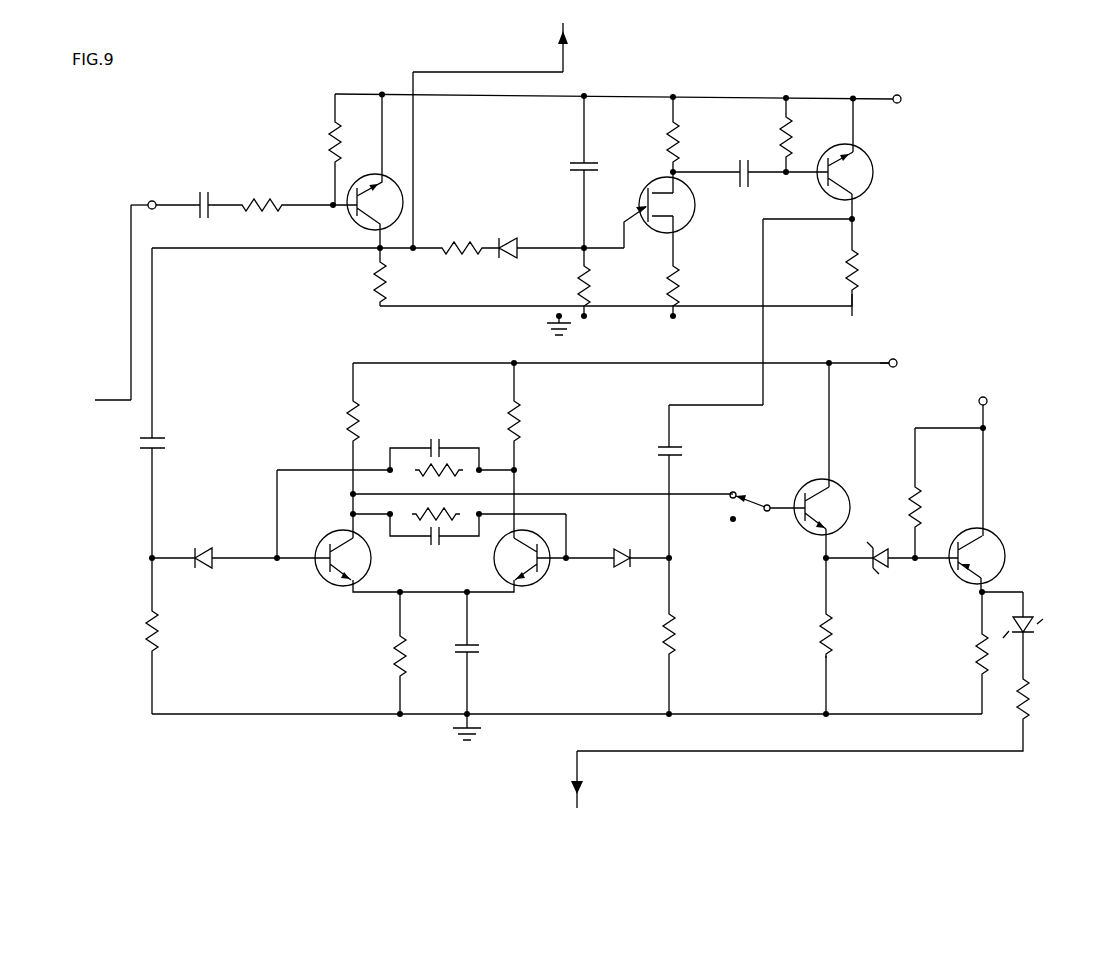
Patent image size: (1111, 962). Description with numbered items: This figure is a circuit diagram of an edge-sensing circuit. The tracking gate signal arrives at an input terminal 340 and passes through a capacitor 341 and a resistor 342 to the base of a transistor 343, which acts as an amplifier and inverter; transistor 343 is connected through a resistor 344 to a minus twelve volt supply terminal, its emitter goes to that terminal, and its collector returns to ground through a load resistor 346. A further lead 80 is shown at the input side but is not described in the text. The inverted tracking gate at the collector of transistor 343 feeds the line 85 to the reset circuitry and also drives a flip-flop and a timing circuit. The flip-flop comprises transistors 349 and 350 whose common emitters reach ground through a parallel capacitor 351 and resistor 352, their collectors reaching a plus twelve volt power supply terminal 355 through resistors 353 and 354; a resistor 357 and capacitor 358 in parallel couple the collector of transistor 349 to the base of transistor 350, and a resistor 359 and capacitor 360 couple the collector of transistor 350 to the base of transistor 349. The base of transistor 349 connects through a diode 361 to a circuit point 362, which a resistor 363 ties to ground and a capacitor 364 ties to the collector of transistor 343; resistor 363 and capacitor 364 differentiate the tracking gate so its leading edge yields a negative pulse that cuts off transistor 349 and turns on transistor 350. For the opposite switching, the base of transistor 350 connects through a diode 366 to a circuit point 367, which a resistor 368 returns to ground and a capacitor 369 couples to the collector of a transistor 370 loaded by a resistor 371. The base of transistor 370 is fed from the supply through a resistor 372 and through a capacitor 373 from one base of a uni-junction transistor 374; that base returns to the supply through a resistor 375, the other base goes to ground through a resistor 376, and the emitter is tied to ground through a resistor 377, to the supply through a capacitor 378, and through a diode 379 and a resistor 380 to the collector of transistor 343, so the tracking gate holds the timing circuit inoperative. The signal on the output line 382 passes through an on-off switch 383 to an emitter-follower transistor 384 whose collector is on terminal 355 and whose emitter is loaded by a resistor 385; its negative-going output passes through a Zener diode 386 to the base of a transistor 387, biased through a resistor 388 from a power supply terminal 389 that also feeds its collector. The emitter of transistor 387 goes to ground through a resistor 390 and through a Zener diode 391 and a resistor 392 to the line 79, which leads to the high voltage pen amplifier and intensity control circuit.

The line 79 is at (585, 790).
The ground lead 80 is at (116, 398).
The line 85 is at (585, 47).
The input terminal 340 is at (153, 200).
The capacitor 341 is at (207, 192).
The resistor 342 is at (252, 196).
The transistor 343 is at (403, 194).
The resistor 344 is at (325, 148).
The load resistor 346 is at (374, 291).
The transistor 349 is at (358, 553).
The transistor 350 is at (528, 578).
The capacitor 351 is at (474, 641).
The resistor 352 is at (396, 648).
The resistor 353 is at (357, 430).
The resistor 354 is at (518, 414).
The power supply terminal 355 is at (898, 361).
The resistor 357 is at (417, 509).
The capacitor 358 is at (443, 538).
The resistor 359 is at (430, 469).
The capacitor 360 is at (440, 440).
The diode 361 is at (208, 556).
The circuit point 362 is at (153, 557).
The resistor 363 is at (155, 634).
The capacitor 364 is at (160, 438).
The diode 366 is at (623, 573).
The circuit point 367 is at (672, 559).
The resistor 368 is at (673, 646).
The capacitor 369 is at (677, 443).
The transistor 370 is at (857, 160).
The load resistor 371 is at (854, 267).
The resistor 372 is at (792, 150).
The capacitor 373 is at (740, 170).
The uni-junction transistor 374 is at (686, 226).
The resistor 375 is at (670, 133).
The resistor 376 is at (680, 295).
The resistor 377 is at (586, 293).
The capacitor 378 is at (577, 163).
The diode 379 is at (511, 254).
The resistor 380 is at (461, 252).
The output line 382 is at (570, 492).
The on-off switch 383 is at (752, 494).
The transistor 384 is at (842, 497).
The resistor 385 is at (830, 642).
The Zener diode 386 is at (879, 566).
The transistor 387 is at (1004, 553).
The resistor 388 is at (920, 510).
The power supply terminal 389 is at (988, 401).
The resistor 390 is at (975, 644).
The Zener diode 391 is at (1041, 623).
The resistor 392 is at (1027, 683).